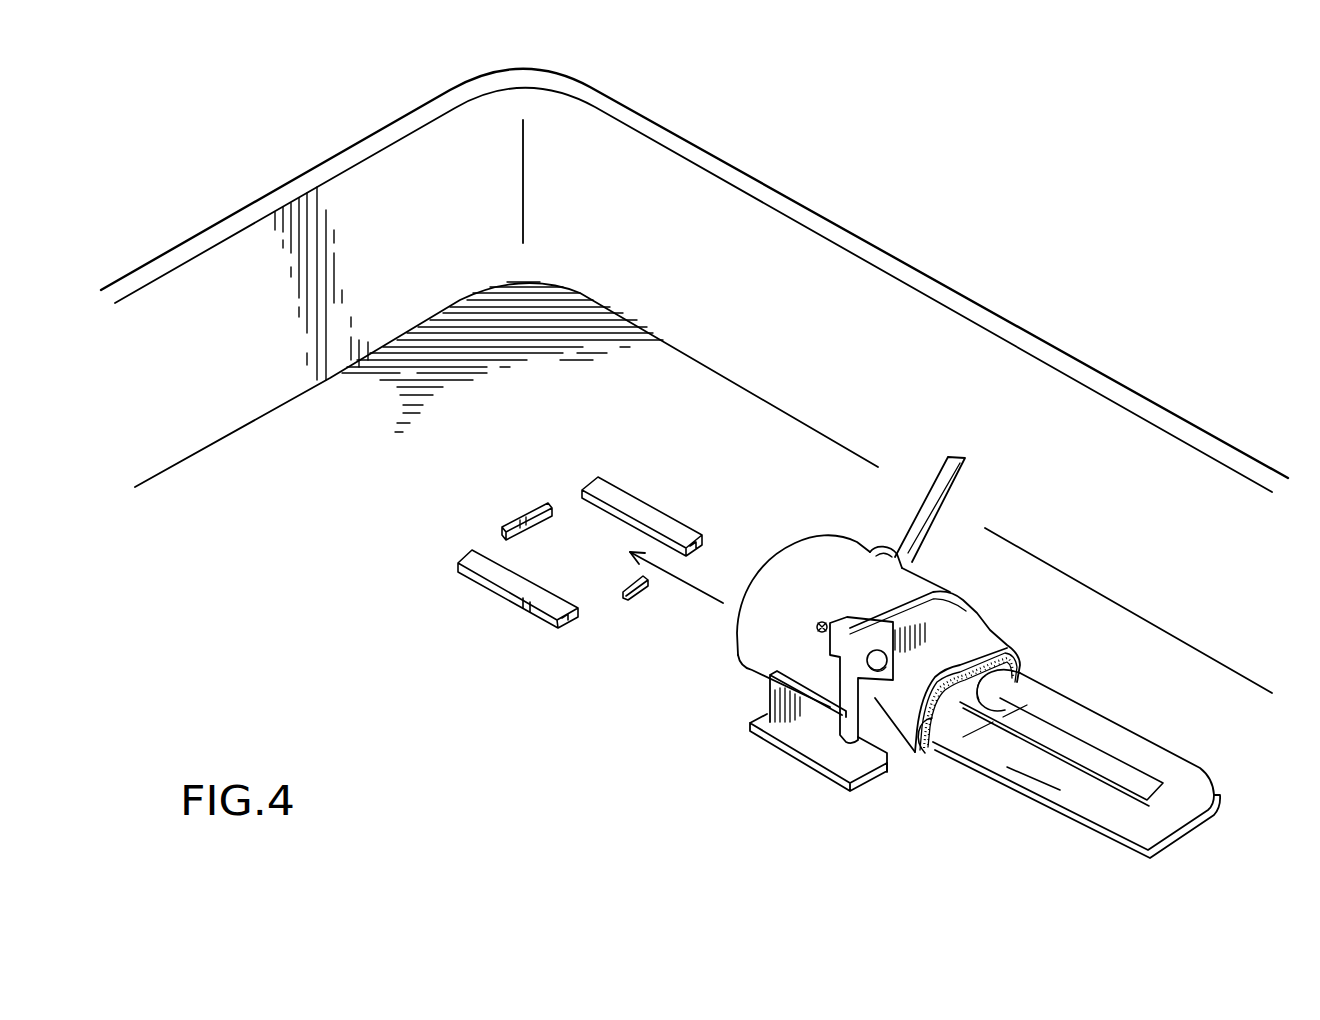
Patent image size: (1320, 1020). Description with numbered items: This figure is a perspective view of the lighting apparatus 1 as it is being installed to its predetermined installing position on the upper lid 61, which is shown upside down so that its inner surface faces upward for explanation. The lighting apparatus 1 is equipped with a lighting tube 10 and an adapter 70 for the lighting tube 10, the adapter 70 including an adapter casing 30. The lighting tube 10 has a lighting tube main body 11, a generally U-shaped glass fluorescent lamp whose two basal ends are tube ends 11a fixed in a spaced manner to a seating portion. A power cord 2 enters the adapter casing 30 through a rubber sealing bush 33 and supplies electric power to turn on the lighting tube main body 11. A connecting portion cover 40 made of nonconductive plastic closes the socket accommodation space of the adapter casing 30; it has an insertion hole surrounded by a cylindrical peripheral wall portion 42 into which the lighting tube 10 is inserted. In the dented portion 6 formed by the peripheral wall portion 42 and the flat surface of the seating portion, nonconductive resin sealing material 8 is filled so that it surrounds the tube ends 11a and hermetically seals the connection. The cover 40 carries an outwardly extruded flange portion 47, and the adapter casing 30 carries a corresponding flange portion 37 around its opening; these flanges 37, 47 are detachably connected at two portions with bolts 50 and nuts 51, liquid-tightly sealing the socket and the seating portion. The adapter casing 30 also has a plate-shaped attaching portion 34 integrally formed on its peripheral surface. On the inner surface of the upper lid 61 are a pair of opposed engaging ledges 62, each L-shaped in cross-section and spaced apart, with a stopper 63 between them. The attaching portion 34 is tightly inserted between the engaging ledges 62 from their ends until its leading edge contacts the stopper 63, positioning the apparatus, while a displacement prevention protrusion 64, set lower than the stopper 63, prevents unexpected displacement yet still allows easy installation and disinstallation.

The lighting apparatus 1 is at (1087, 542).
The power cord 2 is at (948, 486).
The dented portion 6 is at (1020, 657).
The sealing material 8 is at (1023, 710).
The lighting tube 10 is at (1079, 760).
The lighting tube main body 11 is at (1040, 760).
The tube ends 11a is at (990, 680).
The adapter casing 30 is at (887, 614).
The rubber sealing bush 33 is at (890, 557).
The attaching portion 34 is at (822, 757).
The flange portion 37 is at (772, 679).
The connecting portion cover 40 is at (965, 648).
The peripheral wall portion 42 is at (960, 650).
The flange portion 47 is at (790, 754).
The bolts 50 is at (828, 655).
The nuts 51 is at (796, 609).
The upper lid 61 is at (888, 263).
The engaging ledges 62 is at (637, 508).
The stopper 63 is at (522, 517).
The displacement prevention protrusion 64 is at (647, 587).
The adapter 70 is at (733, 648).